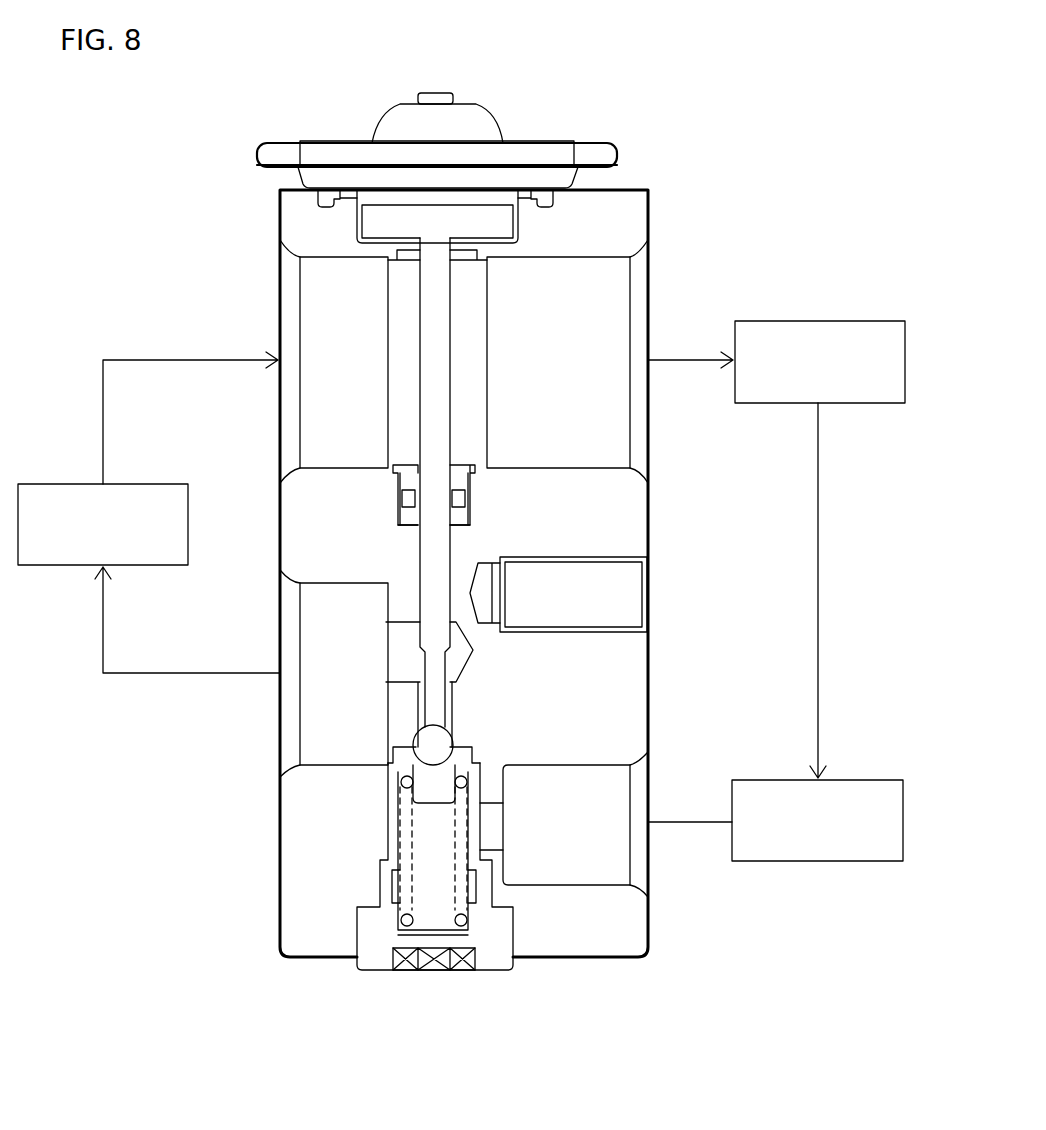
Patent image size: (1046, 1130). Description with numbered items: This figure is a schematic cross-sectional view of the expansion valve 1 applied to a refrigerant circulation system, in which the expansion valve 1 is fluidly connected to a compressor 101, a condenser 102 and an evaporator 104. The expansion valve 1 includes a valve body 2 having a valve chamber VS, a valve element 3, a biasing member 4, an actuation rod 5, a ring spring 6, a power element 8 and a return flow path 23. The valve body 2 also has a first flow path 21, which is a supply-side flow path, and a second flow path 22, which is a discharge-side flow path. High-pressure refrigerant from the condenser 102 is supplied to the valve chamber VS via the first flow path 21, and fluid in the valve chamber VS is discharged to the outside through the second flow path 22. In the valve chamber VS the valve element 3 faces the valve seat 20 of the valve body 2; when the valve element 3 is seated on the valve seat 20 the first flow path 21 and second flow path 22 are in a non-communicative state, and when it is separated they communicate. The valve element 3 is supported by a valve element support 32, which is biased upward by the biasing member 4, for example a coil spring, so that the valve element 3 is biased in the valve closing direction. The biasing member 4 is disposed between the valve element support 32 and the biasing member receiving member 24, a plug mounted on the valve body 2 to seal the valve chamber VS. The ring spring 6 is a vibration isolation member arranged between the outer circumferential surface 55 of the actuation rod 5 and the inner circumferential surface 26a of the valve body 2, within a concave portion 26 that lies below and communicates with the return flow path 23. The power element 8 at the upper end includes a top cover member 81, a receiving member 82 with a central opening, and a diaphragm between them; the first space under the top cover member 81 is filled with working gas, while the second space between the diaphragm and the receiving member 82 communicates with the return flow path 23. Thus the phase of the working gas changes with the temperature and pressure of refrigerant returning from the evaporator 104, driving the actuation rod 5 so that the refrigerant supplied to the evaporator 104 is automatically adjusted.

The expansion valve 1 is at (645, 109).
The valve body 2 is at (626, 662).
The valve element 3 is at (437, 738).
The biasing member 4 is at (468, 925).
The actuation rod 5 is at (435, 358).
The ring spring 6 is at (410, 498).
The power element 8 is at (520, 158).
The top cover member 81 is at (325, 155).
The receiving member 82 is at (313, 175).
The valve seat 20 is at (402, 776).
The first flow path 21 is at (600, 855).
The second flow path 22 is at (347, 705).
The return flow path 23 is at (325, 292).
The biasing member receiving member 24 is at (432, 940).
The concave portion 26 is at (398, 518).
The inner circumferential surface 26a is at (473, 512).
The valve element support 32 is at (437, 784).
The outer circumferential surface 55 is at (473, 483).
The valve chamber VS is at (445, 890).
The compressor 101 is at (838, 321).
The condenser 102 is at (848, 780).
The evaporator 104 is at (133, 484).